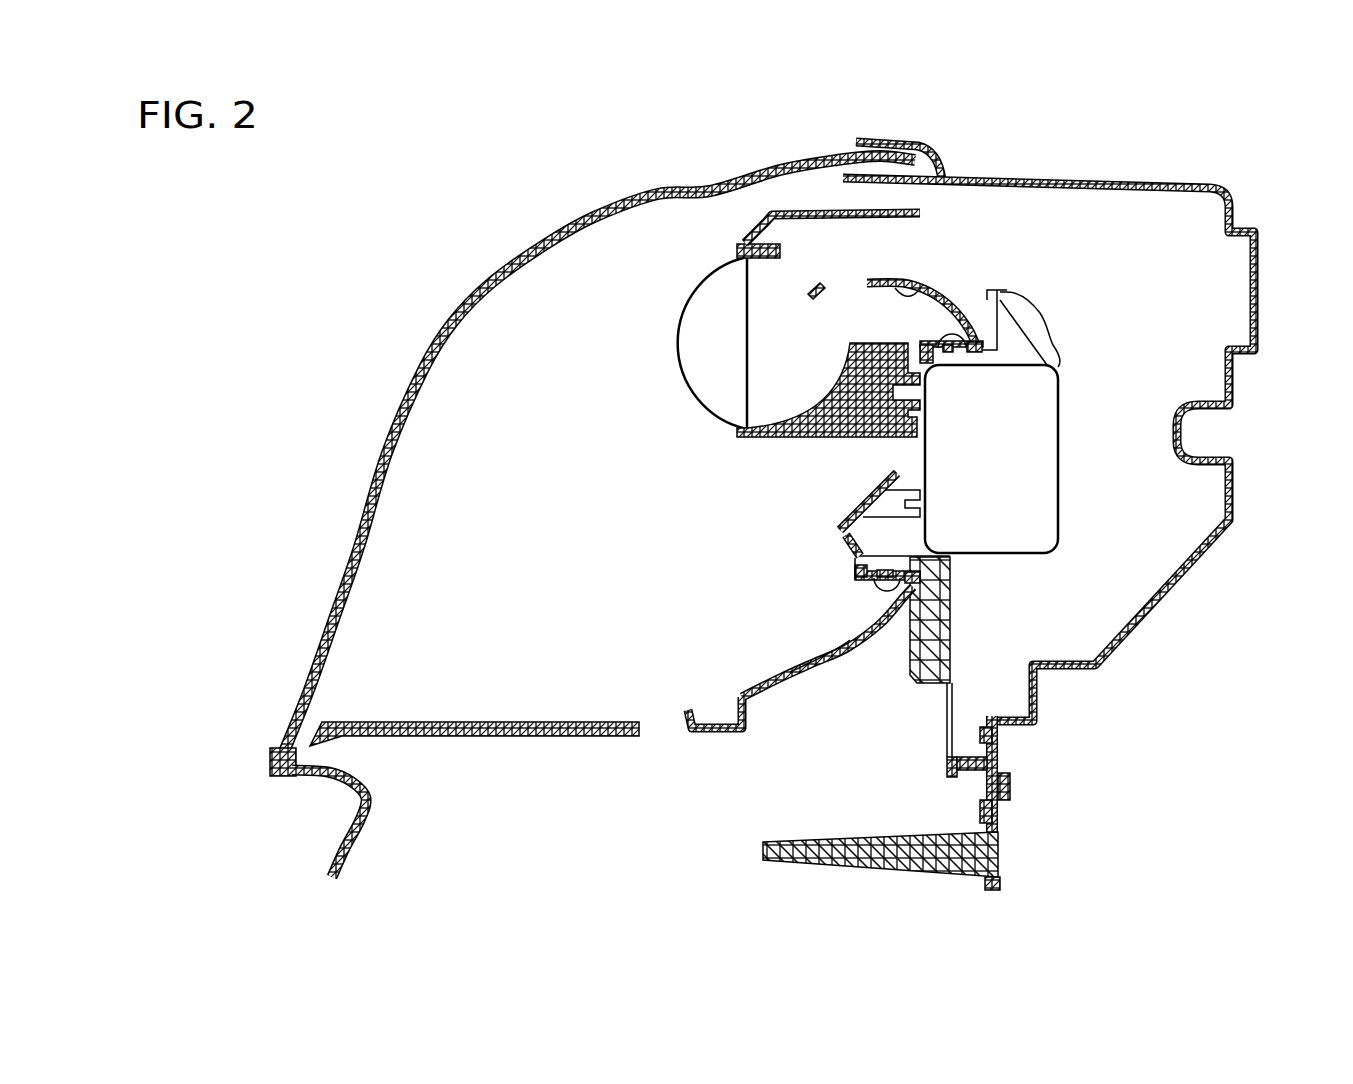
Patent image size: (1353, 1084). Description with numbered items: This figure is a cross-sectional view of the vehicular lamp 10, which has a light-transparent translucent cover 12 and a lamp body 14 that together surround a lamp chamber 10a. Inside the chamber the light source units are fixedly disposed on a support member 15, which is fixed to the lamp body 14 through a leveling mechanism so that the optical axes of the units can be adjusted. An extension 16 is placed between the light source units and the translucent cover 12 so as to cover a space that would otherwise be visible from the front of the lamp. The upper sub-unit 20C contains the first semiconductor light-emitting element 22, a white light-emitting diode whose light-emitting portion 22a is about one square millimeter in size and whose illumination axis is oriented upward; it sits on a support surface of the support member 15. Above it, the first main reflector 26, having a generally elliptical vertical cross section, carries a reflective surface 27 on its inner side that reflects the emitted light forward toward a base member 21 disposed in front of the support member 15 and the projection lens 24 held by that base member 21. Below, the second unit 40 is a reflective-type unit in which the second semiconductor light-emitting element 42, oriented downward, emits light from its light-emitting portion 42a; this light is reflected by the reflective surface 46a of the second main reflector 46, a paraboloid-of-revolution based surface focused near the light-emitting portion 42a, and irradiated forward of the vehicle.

The vehicular lamp 10 is at (368, 407).
The lamp chamber 10a is at (563, 450).
The translucent cover 12 is at (543, 245).
The lamp body 14 is at (1122, 178).
The support member 15 is at (955, 600).
The extension 16 is at (498, 738).
The sub-unit 20C is at (640, 345).
The base member 21 is at (836, 439).
The first semiconductor light-emitting element 22 is at (972, 322).
The light-emitting portion 22a is at (947, 345).
The projection lens 24 is at (712, 303).
The first main reflector 26 is at (960, 335).
The reflective surface 27 is at (945, 288).
The second unit 40 is at (735, 608).
The second semiconductor light-emitting element 42 is at (892, 592).
The light-emitting portion 42a is at (885, 557).
The second main reflector 46 is at (808, 675).
The reflective surface 46a is at (824, 660).